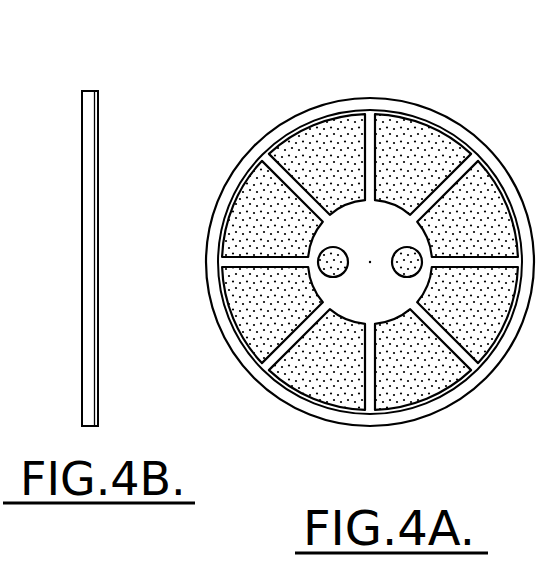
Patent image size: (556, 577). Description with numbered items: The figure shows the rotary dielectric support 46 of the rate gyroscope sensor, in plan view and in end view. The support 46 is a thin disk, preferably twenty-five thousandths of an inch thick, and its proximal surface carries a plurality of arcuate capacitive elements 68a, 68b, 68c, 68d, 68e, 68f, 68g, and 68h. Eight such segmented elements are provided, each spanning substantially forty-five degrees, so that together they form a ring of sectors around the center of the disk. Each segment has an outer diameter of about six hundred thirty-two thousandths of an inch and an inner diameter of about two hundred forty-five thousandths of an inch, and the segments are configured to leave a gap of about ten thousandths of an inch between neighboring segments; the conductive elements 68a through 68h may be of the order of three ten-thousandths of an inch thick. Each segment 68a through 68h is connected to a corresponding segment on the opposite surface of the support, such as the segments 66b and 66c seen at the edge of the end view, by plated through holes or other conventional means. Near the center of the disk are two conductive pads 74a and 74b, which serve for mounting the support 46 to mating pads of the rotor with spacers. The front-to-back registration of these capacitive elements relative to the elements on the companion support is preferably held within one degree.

In FIG. 4B, the rotary dielectric support 46 is at (91, 90).
In FIG. 4A, the rotary dielectric support 46 is at (373, 96).
In FIG. 4B, the segment 66b is at (20, 349).
In FIG. 4B, the segment 66c is at (19, 181).
In FIG. 4A, the arcuate element 68a is at (301, 390).
In FIG. 4A, the arcuate element 68b is at (245, 317).
In FIG. 4A, the arcuate element 68c is at (238, 206).
In FIG. 4A, the arcuate element 68d is at (313, 128).
In FIG. 4A, the arcuate element 68e is at (432, 130).
In FIG. 4A, the arcuate element 68f is at (497, 198).
In FIG. 4A, the arcuate element 68g is at (492, 338).
In FIG. 4A, the arcuate element 68h is at (430, 395).
In FIG. 4A, the conductive pad 74a is at (340, 248).
In FIG. 4A, the conductive pad 74b is at (405, 275).